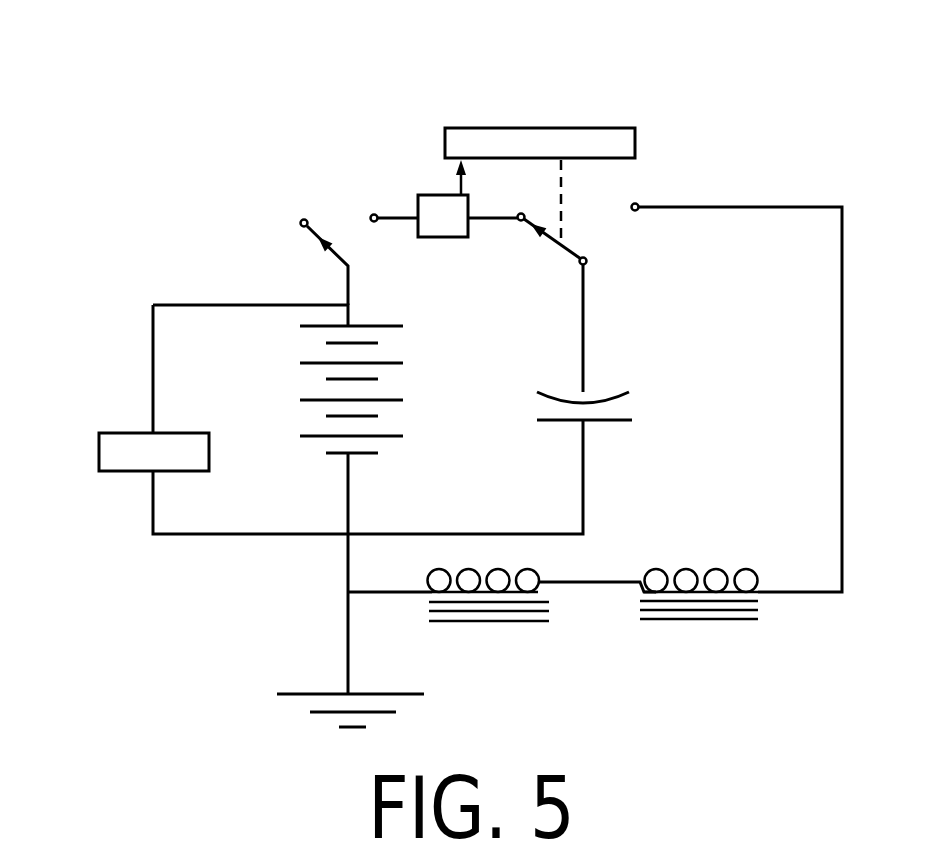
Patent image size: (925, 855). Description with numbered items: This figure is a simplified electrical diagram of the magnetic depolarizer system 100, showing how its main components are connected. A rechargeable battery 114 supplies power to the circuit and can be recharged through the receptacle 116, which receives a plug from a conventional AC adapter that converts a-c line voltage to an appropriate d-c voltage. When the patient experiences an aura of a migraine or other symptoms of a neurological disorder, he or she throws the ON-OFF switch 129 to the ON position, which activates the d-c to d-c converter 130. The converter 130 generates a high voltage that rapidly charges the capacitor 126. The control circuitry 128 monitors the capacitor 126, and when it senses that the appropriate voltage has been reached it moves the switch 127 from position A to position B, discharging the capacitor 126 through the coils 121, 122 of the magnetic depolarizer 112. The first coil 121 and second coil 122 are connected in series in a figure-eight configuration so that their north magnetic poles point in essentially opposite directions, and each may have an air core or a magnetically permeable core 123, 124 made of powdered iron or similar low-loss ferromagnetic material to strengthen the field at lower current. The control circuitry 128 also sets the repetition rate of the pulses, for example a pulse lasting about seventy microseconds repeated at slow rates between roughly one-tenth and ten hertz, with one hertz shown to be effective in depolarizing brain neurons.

The magnetic depolarizer system 100 is at (165, 163).
The magnetic depolarizer 112 is at (636, 683).
The rechargeable battery 114 is at (318, 399).
The receptacle 116 is at (130, 471).
The first coil 121 is at (692, 572).
The second coil 122 is at (523, 572).
The magnetic core 123 is at (707, 622).
The magnetic core 124 is at (483, 621).
The capacitor 126 is at (608, 420).
The switch 127 is at (565, 247).
The control circuitry 128 is at (543, 127).
The ON-OFF switch 129 is at (335, 260).
The d-c to d-c converter 130 is at (427, 193).